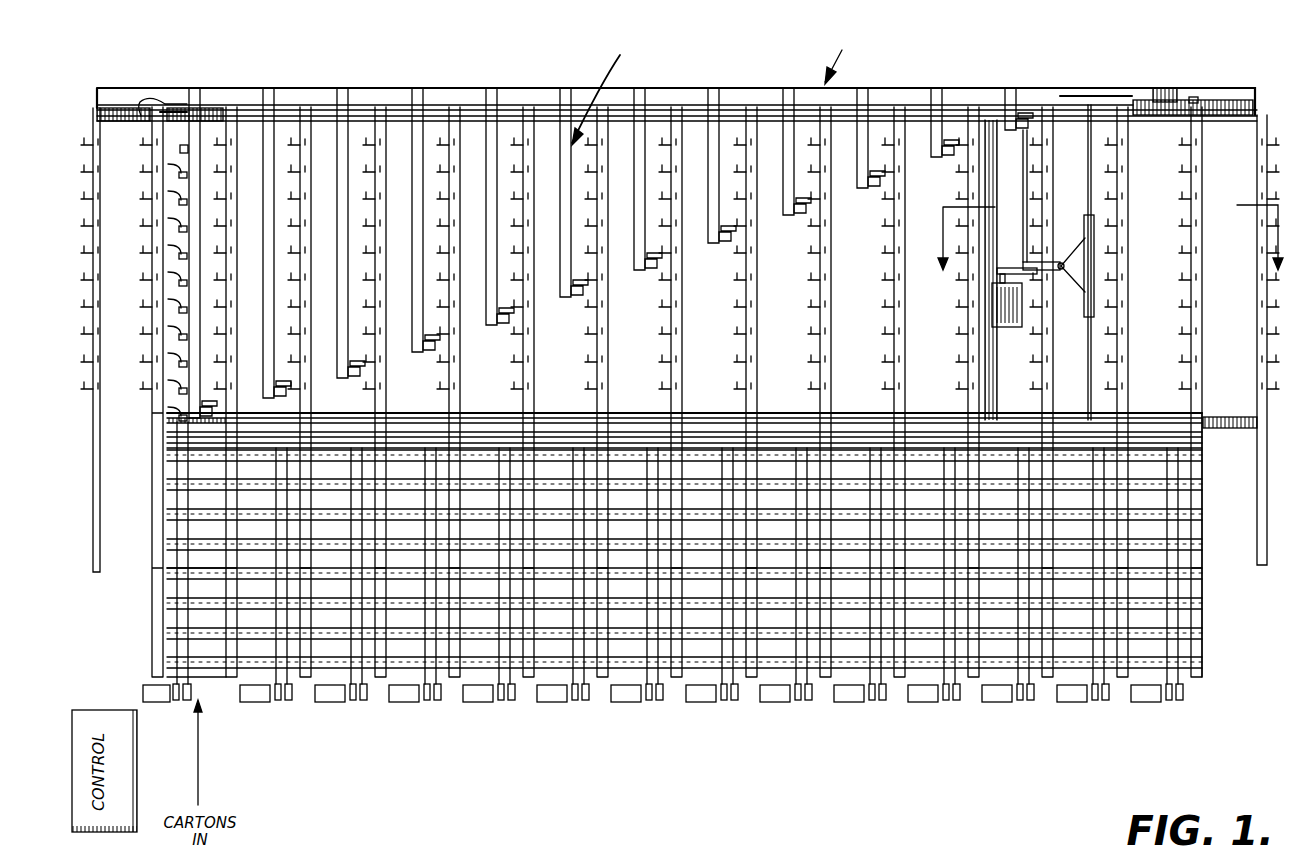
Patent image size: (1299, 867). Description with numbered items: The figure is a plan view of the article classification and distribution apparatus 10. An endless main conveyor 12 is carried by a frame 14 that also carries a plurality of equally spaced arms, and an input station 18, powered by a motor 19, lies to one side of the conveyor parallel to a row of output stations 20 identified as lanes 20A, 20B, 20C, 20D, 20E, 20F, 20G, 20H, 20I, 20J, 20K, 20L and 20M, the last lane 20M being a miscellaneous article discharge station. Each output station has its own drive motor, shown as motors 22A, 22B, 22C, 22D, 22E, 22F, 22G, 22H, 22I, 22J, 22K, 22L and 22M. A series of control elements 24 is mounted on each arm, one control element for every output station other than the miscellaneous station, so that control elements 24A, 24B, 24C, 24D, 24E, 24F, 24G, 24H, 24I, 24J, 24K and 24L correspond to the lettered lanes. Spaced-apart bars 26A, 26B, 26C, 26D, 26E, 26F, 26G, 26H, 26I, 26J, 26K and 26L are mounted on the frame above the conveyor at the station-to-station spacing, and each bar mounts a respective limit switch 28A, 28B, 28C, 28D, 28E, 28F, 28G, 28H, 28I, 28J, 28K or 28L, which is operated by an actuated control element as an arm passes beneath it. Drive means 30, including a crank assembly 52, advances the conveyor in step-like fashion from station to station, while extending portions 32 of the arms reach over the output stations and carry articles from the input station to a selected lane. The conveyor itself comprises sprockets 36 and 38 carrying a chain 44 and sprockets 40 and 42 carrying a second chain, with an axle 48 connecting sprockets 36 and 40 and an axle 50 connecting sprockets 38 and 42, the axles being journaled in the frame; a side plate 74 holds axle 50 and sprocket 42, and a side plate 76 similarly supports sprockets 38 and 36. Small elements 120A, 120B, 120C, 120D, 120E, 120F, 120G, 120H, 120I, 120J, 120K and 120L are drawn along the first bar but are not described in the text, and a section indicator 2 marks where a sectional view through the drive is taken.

The section line 2 is at (1107, 248).
The article classification and distribution apparatus 10 is at (844, 56).
The main conveyor 12 is at (605, 89).
The frame 14 is at (1097, 90).
The input station 18 is at (165, 600).
The motor 19 is at (145, 690).
The output stations 20 is at (1142, 615).
The output station lane 20A is at (292, 758).
The output station lane 20B is at (367, 758).
The output station lane 20C is at (441, 758).
The output station lane 20D is at (515, 758).
The output station lane 20E is at (589, 758).
The output station lane 20F is at (663, 758).
The output station lane 20G is at (738, 758).
The output station lane 20H is at (812, 758).
The output station lane 20I is at (886, 758).
The output station lane 20J is at (960, 758).
The output station lane 20K is at (1034, 758).
The output station lane 20L is at (1109, 758).
The miscellaneous article discharge station 20M is at (1183, 758).
The drive motor 22A is at (279, 617).
The drive motor 22B is at (354, 617).
The drive motor 22C is at (429, 617).
The drive motor 22D is at (503, 617).
The drive motor 22E is at (577, 617).
The drive motor 22F is at (651, 617).
The drive motor 22G is at (726, 617).
The drive motor 22H is at (800, 617).
The drive motor 22I is at (874, 617).
The drive motor 22J is at (948, 617).
The drive motor 22K is at (1023, 617).
The drive motor 22L is at (1096, 617).
The drive motor 22M is at (1171, 617).
The control elements 24 is at (76, 352).
The control element 24A is at (444, 412).
The control element 24B is at (518, 396).
The control element 24C is at (592, 345).
The control element 24D is at (666, 332).
The control element 24E is at (741, 330).
The control element 24F is at (815, 292).
The control element 24G is at (889, 247).
The control element 24H is at (1035, 223).
The control element 24I is at (1107, 197).
The control element 24J is at (1183, 172).
The control element 24K is at (1260, 151).
The control element 24L is at (88, 120).
The bar 26A is at (195, 88).
The bar 26B is at (269, 88).
The bar 26C is at (343, 88).
The bar 26D is at (418, 88).
The bar 26E is at (492, 88).
The bar 26F is at (566, 88).
The bar 26G is at (640, 88).
The bar 26H is at (714, 88).
The bar 26I is at (788, 88).
The bar 26J is at (862, 88).
The bar 26K is at (936, 88).
The bar 26L is at (1010, 88).
The limit switch 28A is at (205, 420).
The limit switch 28B is at (282, 400).
The limit switch 28C is at (355, 378).
The limit switch 28D is at (429, 352).
The limit switch 28E is at (503, 325).
The limit switch 28F is at (576, 297).
The limit switch 28G is at (651, 270).
The limit switch 28H is at (727, 243).
The limit switch 28I is at (800, 215).
The limit switch 28J is at (872, 186).
The limit switch 28K is at (950, 142).
The limit switch 28L is at (1020, 133).
The drive means 30 is at (1062, 262).
The extending portions 32 is at (230, 525).
The sprocket 36 is at (112, 108).
The sprocket 38 is at (1245, 100).
The sprocket 40 is at (698, 416).
The sprocket 42 is at (1243, 430).
The chain 44 is at (1065, 100).
The axle 48 is at (142, 116).
The axle 50 is at (1193, 97).
The crank assembly 52 is at (1085, 300).
The side plate 74 is at (684, 449).
The side plate 76 is at (1158, 90).
The lane sensor 120A is at (168, 407).
The lane sensor 120B is at (168, 380).
The lane sensor 120C is at (168, 353).
The lane sensor 120D is at (168, 326).
The lane sensor 120E is at (168, 299).
The lane sensor 120F is at (168, 272).
The lane sensor 120G is at (168, 245).
The lane sensor 120H is at (168, 218).
The lane sensor 120I is at (168, 191).
The lane sensor 120J is at (168, 164).
The lane sensor 120K is at (188, 146).
The lane sensor 120L is at (185, 112).